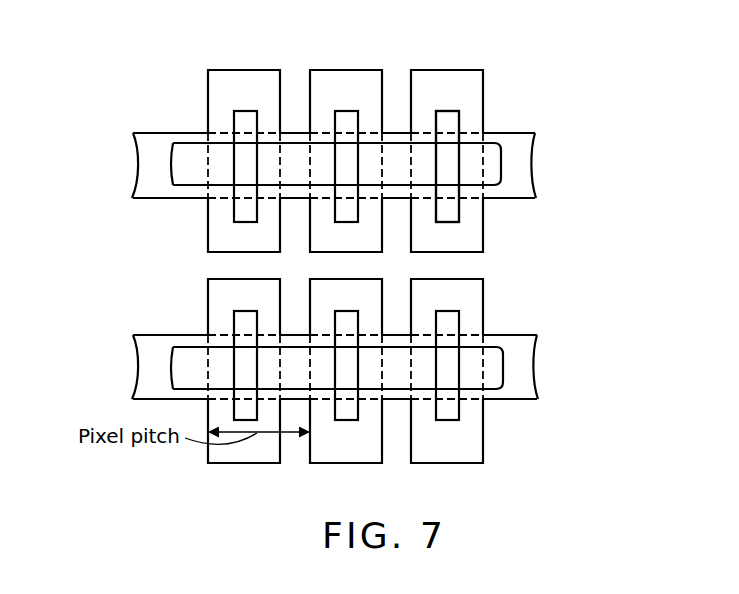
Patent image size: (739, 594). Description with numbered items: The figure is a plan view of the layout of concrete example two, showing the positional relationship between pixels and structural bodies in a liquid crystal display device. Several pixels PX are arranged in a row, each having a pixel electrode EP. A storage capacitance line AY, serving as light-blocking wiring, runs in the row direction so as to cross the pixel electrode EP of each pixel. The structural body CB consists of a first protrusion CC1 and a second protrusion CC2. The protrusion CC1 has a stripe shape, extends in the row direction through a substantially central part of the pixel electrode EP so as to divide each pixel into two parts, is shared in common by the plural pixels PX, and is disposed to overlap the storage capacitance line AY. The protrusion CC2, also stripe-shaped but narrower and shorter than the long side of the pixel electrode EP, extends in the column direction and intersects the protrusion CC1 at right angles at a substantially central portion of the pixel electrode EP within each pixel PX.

The pixel PX is at (491, 68).
The pixel electrode EP is at (357, 80).
The storage capacitance line AY is at (132, 169).
The protrusion (first protrusion) CC1 is at (502, 160).
The protrusion (second protrusion) CC2 is at (460, 211).
The structural body CB is at (602, 142).